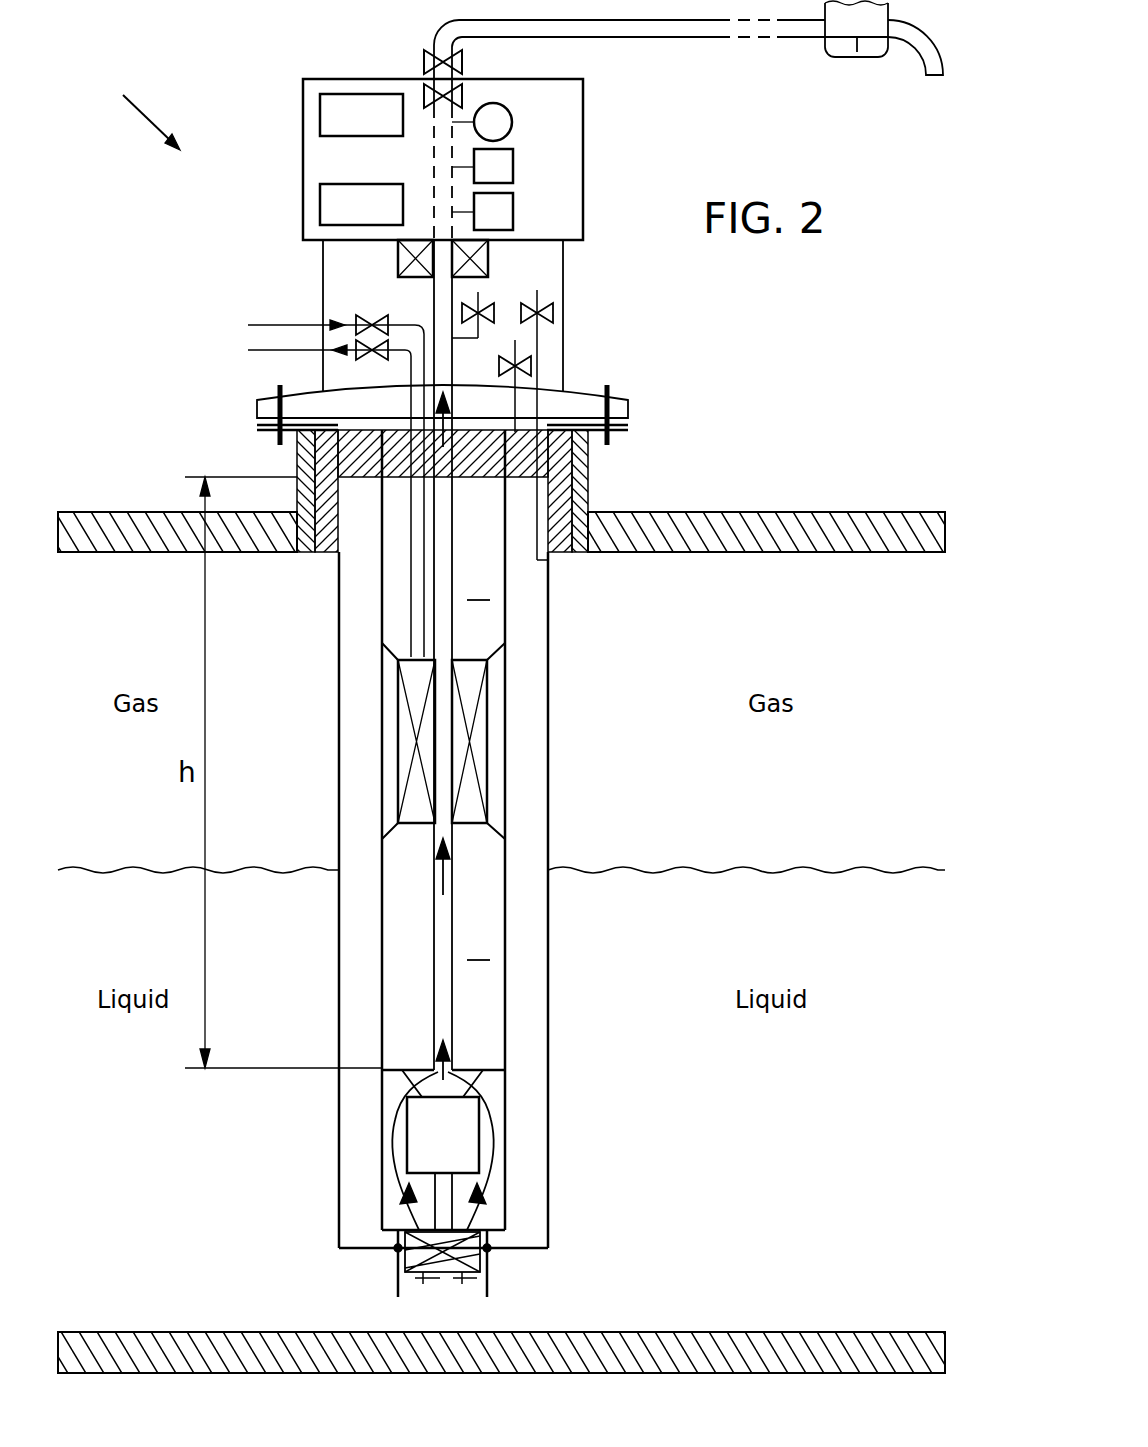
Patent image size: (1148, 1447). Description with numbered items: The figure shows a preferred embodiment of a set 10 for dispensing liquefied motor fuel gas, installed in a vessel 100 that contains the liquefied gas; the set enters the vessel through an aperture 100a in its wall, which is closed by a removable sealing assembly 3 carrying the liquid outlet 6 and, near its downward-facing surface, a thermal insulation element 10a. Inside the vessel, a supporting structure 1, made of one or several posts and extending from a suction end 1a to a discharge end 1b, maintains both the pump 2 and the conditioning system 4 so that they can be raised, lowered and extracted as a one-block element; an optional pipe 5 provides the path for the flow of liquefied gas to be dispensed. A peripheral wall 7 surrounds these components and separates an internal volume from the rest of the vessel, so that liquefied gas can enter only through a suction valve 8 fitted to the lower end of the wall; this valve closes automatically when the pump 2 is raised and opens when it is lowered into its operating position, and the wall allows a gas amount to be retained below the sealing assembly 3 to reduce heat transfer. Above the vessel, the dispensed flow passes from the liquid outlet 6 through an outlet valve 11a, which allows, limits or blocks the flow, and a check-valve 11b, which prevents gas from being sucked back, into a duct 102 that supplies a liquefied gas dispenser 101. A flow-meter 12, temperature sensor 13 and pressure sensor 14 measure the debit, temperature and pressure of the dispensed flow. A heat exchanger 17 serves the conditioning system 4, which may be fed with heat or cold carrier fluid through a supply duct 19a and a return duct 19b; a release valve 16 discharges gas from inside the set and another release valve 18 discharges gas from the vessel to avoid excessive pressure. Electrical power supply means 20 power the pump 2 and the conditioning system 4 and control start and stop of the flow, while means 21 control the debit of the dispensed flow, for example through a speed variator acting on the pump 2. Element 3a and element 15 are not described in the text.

The set for dispensing the liquefied motor fuel gas 10 is at (141, 109).
The supporting structure 1 is at (508, 868).
The suction end of the supporting structure 1a is at (487, 1267).
The discharge end of the supporting structure 1b is at (507, 493).
The pump 2 is at (480, 1145).
The removable sealing assembly 3 is at (565, 392).
The wellhead seal 3a is at (363, 425).
The conditioning system 4 is at (478, 748).
The pipe 5 is at (452, 1020).
The liquid outlet 6 is at (453, 373).
The peripheral wall 7 is at (548, 926).
The suction valve 8 is at (487, 1283).
The thermal insulation element 10a is at (478, 467).
The outlet valve 11a is at (465, 97).
The check-valve 11b is at (424, 62).
The flow-meter 12 is at (513, 213).
The temperature sensor 13 is at (513, 167).
The pressure sensor 14 is at (513, 117).
The valve 15 is at (492, 312).
The release valve 16 is at (521, 360).
The heat exchanger 17 is at (397, 258).
The release valve 18 is at (542, 302).
The supply duct 19a is at (296, 322).
The return duct 19b is at (296, 352).
The electrical power supply means 20 is at (320, 208).
The means for controlling a debit of the flow 21 is at (320, 112).
The vessel 100 is at (780, 512).
The aperture 100a is at (572, 457).
The liquefied gas dispenser 101 is at (920, 58).
The duct 102 is at (655, 38).